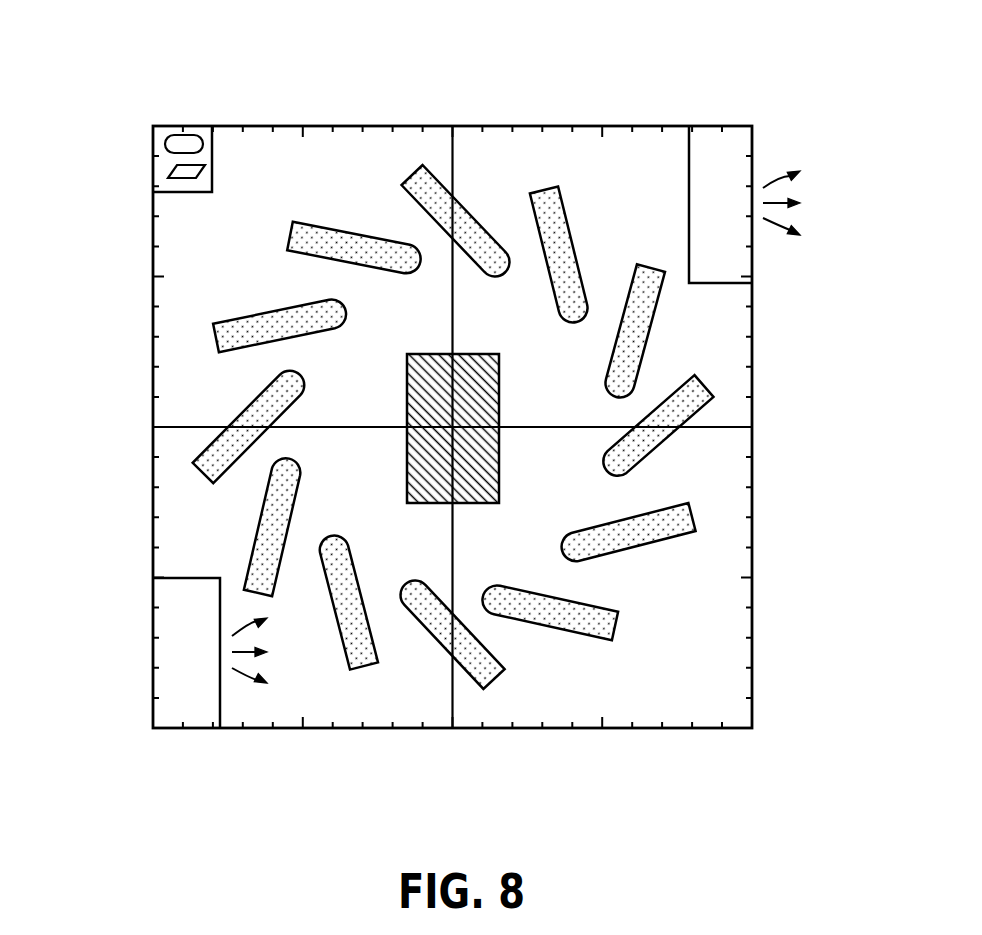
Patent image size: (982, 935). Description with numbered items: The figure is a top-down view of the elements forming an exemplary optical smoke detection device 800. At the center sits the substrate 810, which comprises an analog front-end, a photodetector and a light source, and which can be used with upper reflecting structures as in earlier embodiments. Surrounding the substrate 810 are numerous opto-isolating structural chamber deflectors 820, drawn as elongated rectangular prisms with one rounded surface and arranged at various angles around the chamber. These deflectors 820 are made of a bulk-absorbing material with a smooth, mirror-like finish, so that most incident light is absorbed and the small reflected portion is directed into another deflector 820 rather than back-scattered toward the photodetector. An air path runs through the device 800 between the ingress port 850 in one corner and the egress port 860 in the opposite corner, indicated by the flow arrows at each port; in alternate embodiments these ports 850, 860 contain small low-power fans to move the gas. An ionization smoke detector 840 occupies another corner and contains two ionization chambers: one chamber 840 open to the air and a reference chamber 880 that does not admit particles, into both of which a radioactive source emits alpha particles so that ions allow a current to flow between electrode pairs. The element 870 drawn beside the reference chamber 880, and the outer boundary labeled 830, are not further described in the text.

The optical smoke detection device 800 is at (700, 765).
The substrate 810 is at (515, 397).
The opto-isolating structural chamber deflectors 820 is at (296, 266).
The enclosure boundary 830 is at (770, 576).
The ionization smoke detector 840 is at (178, 112).
The ingress port 850 is at (145, 656).
The egress port 860 is at (720, 113).
The indicator 870 is at (148, 145).
The reference chamber 880 is at (158, 176).